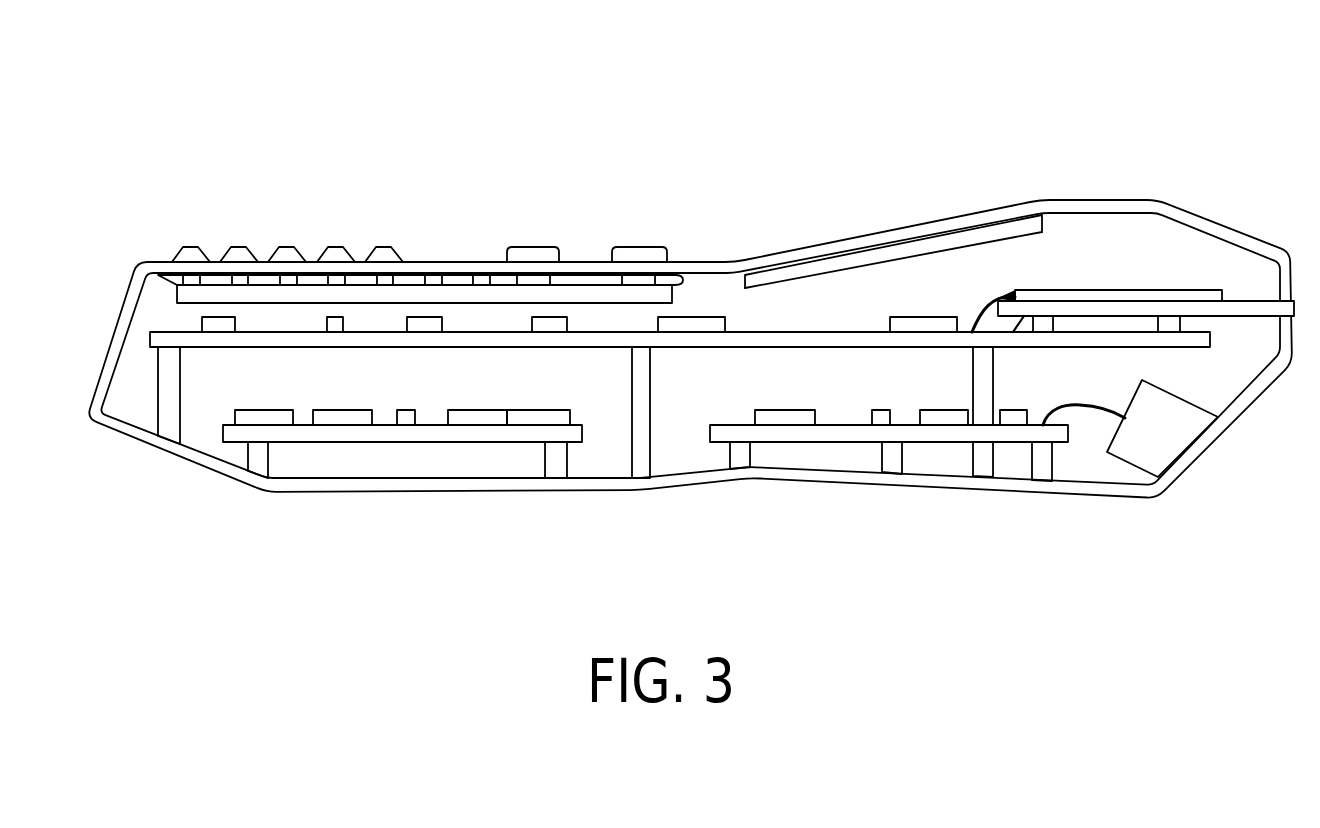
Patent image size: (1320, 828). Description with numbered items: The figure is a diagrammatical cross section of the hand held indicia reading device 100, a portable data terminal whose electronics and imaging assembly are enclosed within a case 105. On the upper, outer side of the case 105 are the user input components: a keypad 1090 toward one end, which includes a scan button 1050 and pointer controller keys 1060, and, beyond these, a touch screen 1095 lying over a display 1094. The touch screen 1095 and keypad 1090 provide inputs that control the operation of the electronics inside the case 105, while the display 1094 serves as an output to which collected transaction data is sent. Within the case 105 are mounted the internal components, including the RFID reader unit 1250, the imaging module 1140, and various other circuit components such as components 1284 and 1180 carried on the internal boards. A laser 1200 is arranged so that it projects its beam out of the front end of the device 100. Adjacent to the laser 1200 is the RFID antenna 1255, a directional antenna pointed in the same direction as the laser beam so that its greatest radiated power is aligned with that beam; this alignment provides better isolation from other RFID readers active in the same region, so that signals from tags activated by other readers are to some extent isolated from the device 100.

The hand held indicia reading device 100 is at (1140, 112).
The case 105 is at (202, 468).
The keypad 1090 is at (256, 176).
The pointer controller keys 1060 is at (533, 247).
The scan button 1050 is at (637, 247).
The touch screen 1095 is at (895, 228).
The display 1094 is at (925, 255).
The RFID reader unit 1250 is at (927, 317).
The RFID antenna 1255 is at (1118, 290).
The laser 1200 is at (1252, 300).
The imaging module 1140 is at (1188, 402).
The circuit component 1284 is at (783, 410).
The circuit component 1180 is at (943, 410).